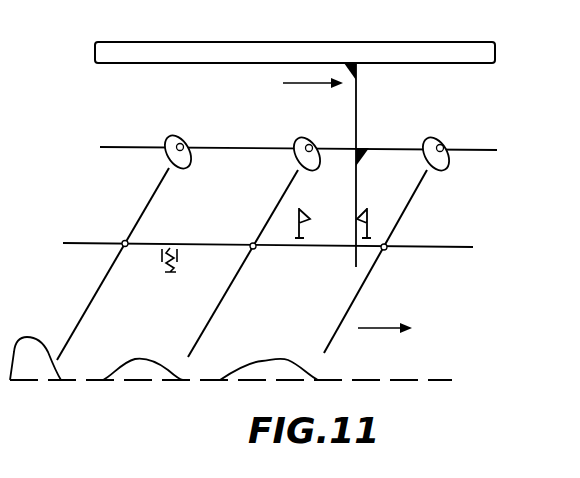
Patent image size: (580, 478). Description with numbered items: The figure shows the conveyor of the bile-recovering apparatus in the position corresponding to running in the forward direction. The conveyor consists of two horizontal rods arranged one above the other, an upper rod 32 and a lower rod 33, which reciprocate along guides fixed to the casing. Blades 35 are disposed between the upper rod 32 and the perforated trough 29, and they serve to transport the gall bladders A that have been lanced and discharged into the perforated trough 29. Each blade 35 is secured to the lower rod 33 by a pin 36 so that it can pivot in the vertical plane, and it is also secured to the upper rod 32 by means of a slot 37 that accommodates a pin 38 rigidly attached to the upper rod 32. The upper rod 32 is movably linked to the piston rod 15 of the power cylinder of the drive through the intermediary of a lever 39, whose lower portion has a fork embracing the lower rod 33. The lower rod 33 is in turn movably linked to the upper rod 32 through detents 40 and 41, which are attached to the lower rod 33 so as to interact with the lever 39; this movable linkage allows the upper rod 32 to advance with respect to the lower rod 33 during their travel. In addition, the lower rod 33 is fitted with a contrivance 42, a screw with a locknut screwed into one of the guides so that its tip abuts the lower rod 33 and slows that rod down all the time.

The piston rod 15 is at (268, 50).
The perforated trough 29 is at (132, 368).
The gall bladders A is at (32, 365).
The upper rod 32 is at (232, 146).
The lower rod 33 is at (212, 243).
The blades 35 is at (268, 218).
The pin 36 is at (123, 241).
The slot 37 is at (165, 172).
The pin 38 is at (172, 142).
The lever 39 is at (357, 119).
The detent 40 is at (305, 213).
The detent 41 is at (369, 213).
The contrivance 42 is at (170, 274).